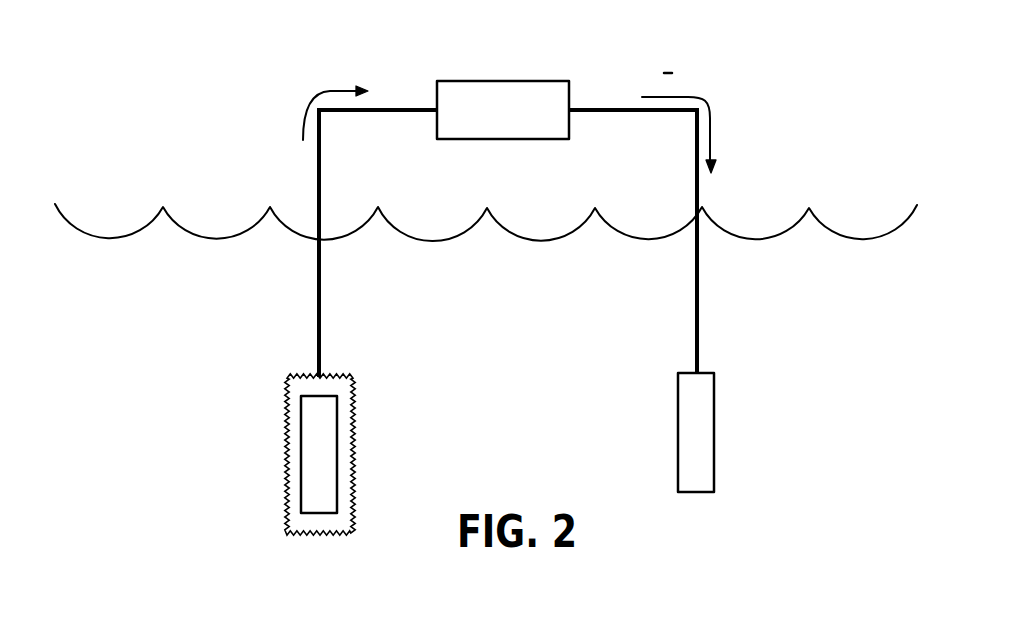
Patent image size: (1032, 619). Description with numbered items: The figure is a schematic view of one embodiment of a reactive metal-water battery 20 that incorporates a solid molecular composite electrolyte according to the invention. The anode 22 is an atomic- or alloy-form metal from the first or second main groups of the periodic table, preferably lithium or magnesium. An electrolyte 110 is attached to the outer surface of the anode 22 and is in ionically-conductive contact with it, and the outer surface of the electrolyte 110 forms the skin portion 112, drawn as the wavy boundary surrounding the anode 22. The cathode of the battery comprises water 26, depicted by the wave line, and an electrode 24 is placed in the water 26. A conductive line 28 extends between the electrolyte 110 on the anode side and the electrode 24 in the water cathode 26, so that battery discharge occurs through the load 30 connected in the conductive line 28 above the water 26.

The reactive metal-water battery 20 is at (213, 197).
The anode 22 is at (318, 460).
The electrode 24 is at (695, 450).
The water 26 is at (520, 337).
The conductive line 28 is at (600, 107).
The load 30 is at (490, 108).
The electrolyte 110 is at (295, 433).
The skin portion 112 is at (285, 487).